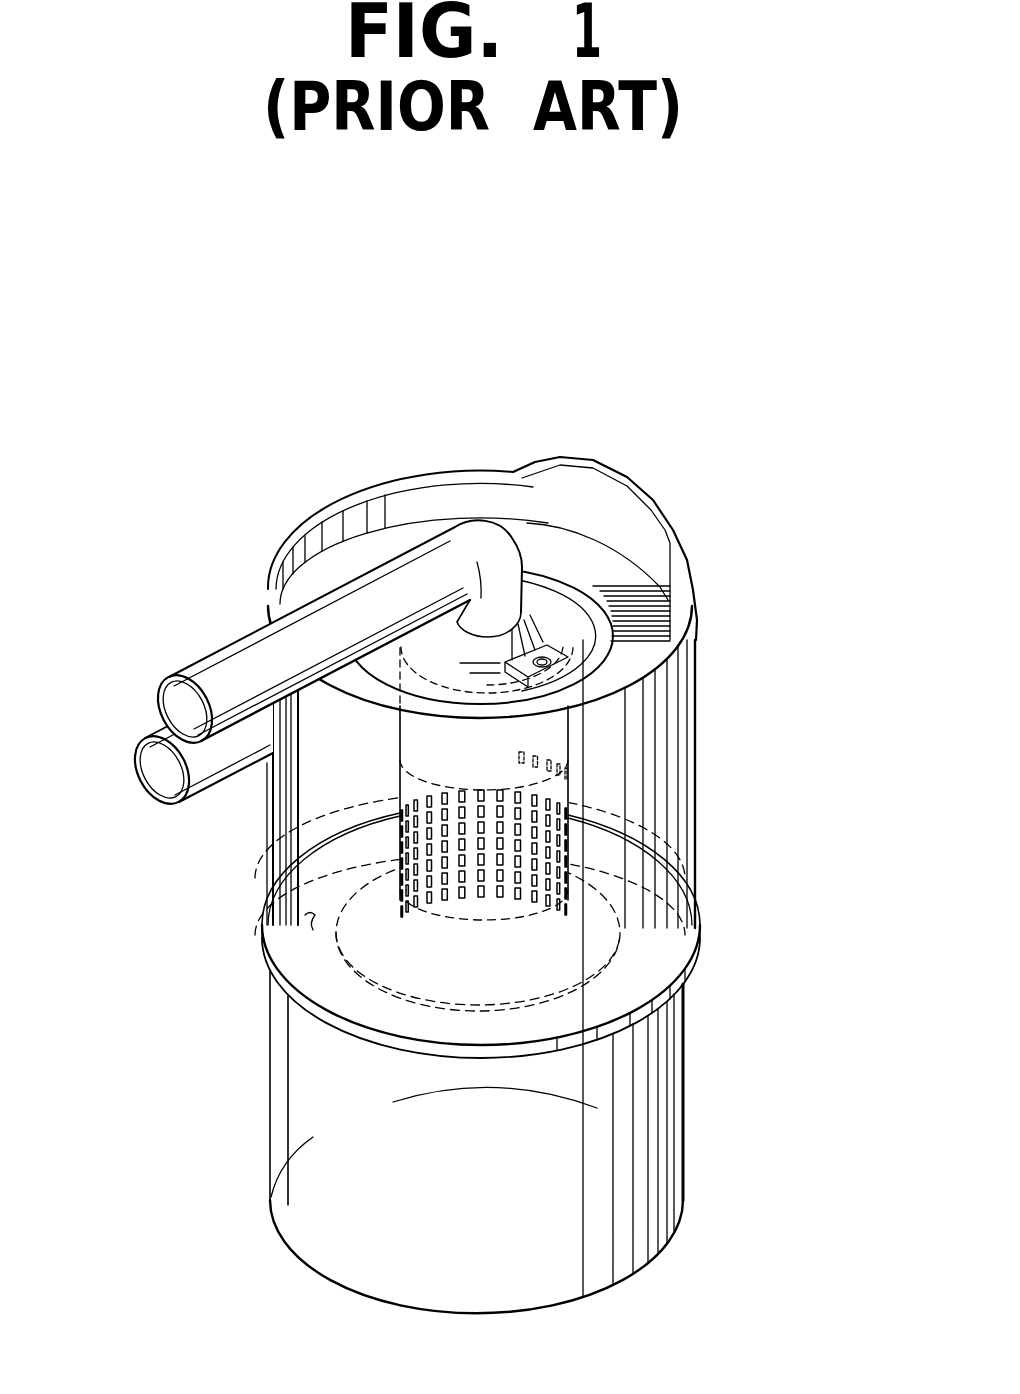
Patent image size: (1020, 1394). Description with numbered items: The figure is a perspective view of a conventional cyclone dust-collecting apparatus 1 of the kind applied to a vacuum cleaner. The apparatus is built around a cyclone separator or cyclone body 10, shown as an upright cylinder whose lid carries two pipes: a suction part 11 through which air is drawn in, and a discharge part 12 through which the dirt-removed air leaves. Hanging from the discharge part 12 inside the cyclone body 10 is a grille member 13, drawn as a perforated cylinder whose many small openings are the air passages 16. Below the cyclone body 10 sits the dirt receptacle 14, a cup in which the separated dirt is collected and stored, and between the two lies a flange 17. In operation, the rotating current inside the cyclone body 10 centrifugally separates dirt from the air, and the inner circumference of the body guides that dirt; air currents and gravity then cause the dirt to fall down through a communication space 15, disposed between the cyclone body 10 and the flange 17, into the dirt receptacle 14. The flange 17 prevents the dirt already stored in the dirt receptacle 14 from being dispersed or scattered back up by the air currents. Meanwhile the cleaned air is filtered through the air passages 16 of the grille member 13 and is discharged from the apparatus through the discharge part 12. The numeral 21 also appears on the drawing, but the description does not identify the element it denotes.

The cyclone dust-collecting apparatus 1 is at (166, 466).
The cyclone body 10 is at (692, 643).
The suction part 11 is at (160, 731).
The discharge part 12 is at (242, 668).
The grille member 13 is at (566, 787).
The dirt receptacle 14 is at (640, 1137).
The communication space 15 is at (263, 938).
The air passages 16 is at (290, 828).
The flange 17 is at (297, 880).
The cyclone chamber 21 is at (225, 1034).